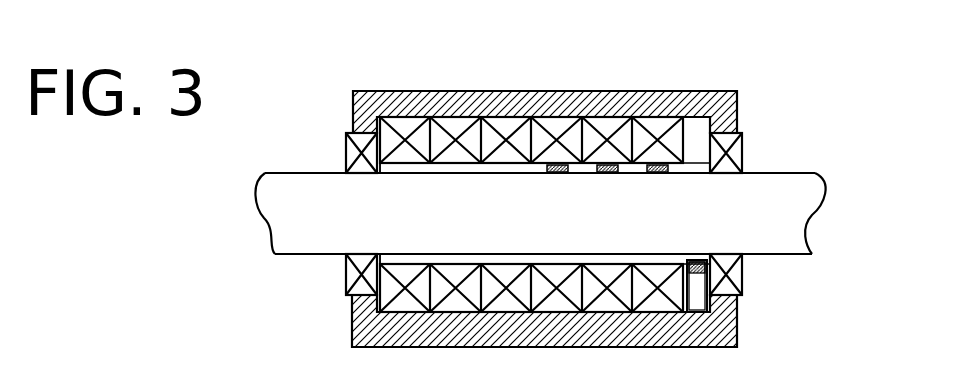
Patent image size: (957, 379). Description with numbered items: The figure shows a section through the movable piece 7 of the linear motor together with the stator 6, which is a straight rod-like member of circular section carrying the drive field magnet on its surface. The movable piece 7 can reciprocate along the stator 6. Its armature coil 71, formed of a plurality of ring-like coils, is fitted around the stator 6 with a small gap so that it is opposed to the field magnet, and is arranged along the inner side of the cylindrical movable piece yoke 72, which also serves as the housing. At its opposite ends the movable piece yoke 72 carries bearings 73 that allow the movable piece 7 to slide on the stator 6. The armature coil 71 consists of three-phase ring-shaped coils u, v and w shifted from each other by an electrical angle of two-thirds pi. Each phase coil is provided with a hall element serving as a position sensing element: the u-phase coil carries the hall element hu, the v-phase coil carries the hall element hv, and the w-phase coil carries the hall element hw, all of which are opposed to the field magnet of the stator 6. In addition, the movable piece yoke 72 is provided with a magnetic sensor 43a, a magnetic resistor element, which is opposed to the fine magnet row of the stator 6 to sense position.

The stator 6 is at (290, 163).
The movable piece 7 is at (543, 79).
The armature coil 71 is at (505, 116).
The movable piece yoke 72 is at (443, 90).
The bearing 73 is at (345, 148).
The hall element hw is at (557, 165).
The hall element hv is at (607, 165).
The hall element hu is at (657, 165).
The magnetic sensor 43a is at (708, 272).